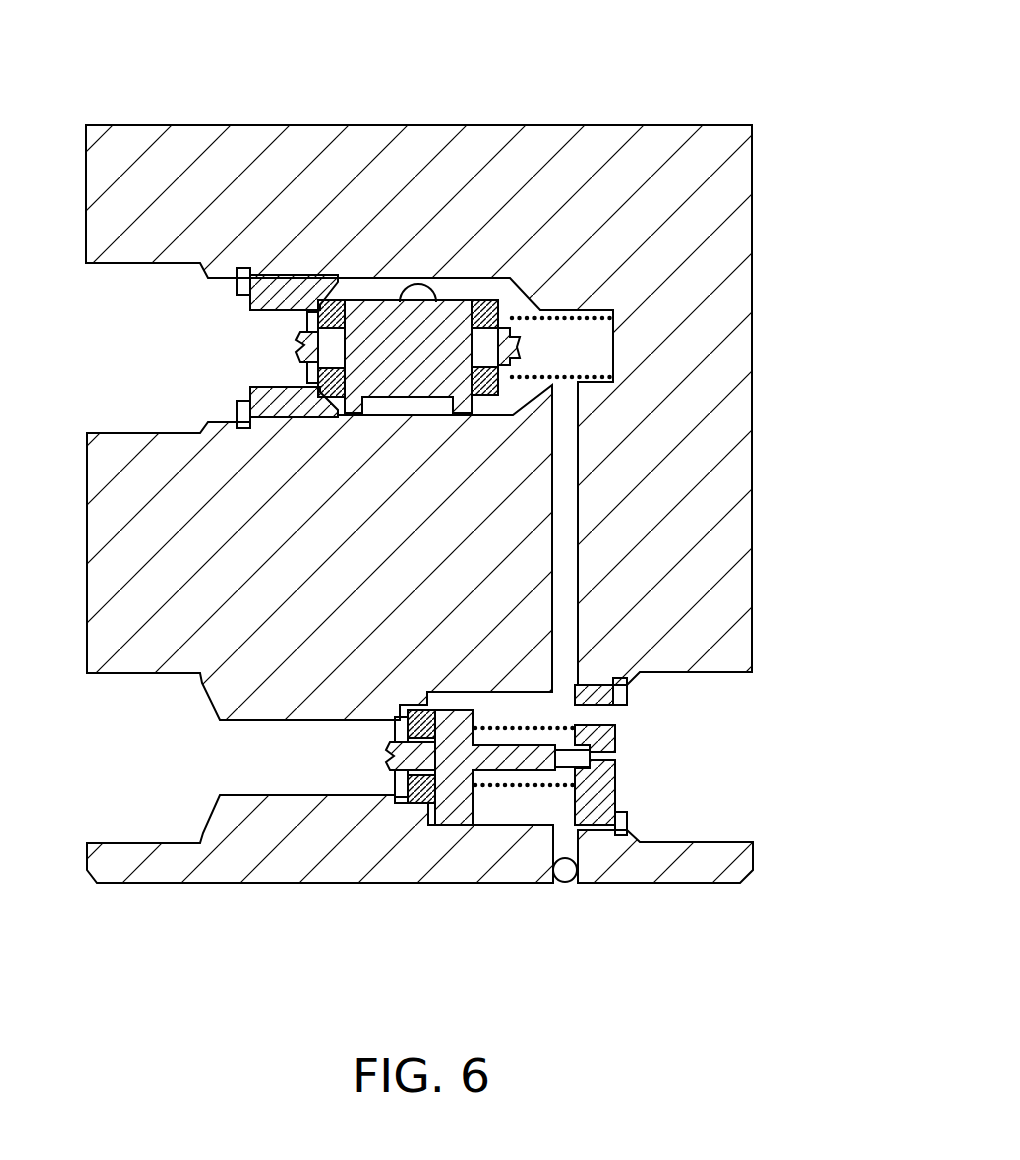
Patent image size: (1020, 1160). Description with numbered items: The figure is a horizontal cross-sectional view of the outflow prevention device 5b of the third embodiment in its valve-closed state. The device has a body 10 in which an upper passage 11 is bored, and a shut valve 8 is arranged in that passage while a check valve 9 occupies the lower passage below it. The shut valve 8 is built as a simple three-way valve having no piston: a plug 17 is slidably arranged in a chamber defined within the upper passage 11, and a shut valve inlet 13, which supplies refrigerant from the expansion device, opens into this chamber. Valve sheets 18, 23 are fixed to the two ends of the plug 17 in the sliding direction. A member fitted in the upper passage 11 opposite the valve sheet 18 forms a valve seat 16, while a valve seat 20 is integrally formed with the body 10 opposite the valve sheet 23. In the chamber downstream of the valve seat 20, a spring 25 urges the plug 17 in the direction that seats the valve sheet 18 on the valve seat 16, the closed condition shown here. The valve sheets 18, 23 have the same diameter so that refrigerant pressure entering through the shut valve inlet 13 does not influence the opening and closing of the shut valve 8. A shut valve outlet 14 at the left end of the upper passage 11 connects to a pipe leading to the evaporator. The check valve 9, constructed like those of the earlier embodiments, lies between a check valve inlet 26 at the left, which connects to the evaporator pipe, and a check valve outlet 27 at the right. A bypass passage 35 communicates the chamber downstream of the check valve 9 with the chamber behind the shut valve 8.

The outflow prevention device 5b is at (688, 88).
The shut valve 8 is at (266, 348).
The check valve 9 is at (370, 757).
The body 10 is at (753, 177).
The upper passage 11 is at (495, 417).
The shut valve inlet 13 is at (418, 283).
The shut valve outlet 14 is at (118, 298).
The valve seat 16 is at (310, 277).
The plug 17 is at (380, 298).
The valve sheet 18 is at (350, 298).
The valve seat 20 is at (525, 285).
The valve sheet 23 is at (480, 300).
The spring 25 is at (567, 316).
The check valve inlet 26 is at (115, 742).
The check valve outlet 27 is at (720, 767).
The bypass passage 35 is at (565, 558).